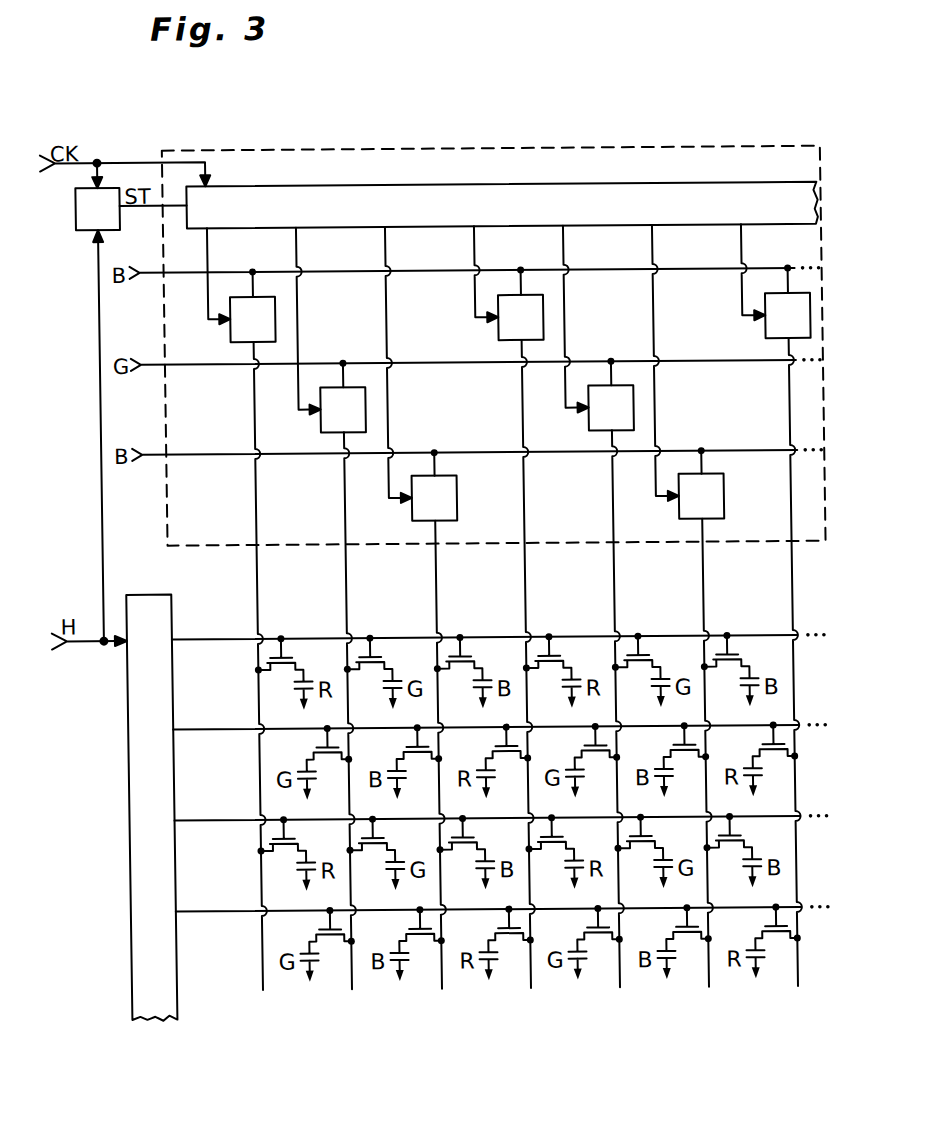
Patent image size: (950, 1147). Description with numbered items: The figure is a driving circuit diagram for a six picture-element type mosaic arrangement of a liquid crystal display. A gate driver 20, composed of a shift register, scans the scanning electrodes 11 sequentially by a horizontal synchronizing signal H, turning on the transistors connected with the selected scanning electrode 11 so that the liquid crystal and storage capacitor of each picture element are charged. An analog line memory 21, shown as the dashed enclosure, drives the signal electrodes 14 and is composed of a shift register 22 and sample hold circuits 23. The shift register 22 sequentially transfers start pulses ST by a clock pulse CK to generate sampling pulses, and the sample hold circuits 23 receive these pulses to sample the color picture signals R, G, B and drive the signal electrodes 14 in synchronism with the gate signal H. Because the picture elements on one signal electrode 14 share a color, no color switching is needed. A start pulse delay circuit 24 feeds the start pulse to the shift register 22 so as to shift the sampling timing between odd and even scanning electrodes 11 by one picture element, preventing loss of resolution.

The scanning electrode 11 is at (207, 639).
The signal electrode 14 is at (257, 589).
The gate driver 20 is at (122, 730).
The analog line memory 21 is at (480, 148).
The shift register 22 is at (595, 182).
The sample hold circuit 23 is at (230, 330).
The start pulse delay circuit 24 is at (77, 215).